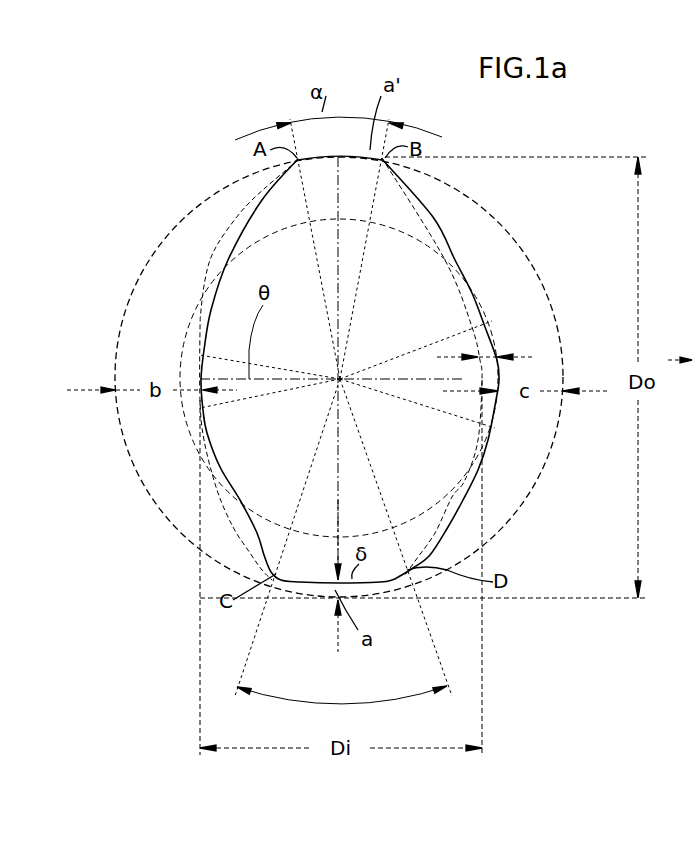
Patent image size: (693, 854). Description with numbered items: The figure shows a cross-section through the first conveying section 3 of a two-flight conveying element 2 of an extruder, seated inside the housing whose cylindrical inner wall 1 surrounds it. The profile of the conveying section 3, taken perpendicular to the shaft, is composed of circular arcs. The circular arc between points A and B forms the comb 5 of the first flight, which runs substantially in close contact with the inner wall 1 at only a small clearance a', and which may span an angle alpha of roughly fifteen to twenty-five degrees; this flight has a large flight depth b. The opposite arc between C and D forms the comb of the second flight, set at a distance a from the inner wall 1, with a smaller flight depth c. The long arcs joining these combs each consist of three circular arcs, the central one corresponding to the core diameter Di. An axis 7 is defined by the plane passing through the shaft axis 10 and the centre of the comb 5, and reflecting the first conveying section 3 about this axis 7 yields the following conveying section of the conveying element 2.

The cylindrical inner wall 1 is at (489, 225).
The two-flight conveying element 2 is at (690, 275).
The first conveying section 3 is at (212, 307).
The comb of the first flight 5 is at (341, 158).
The axis 7 is at (342, 300).
The shaft axis 10 is at (344, 384).